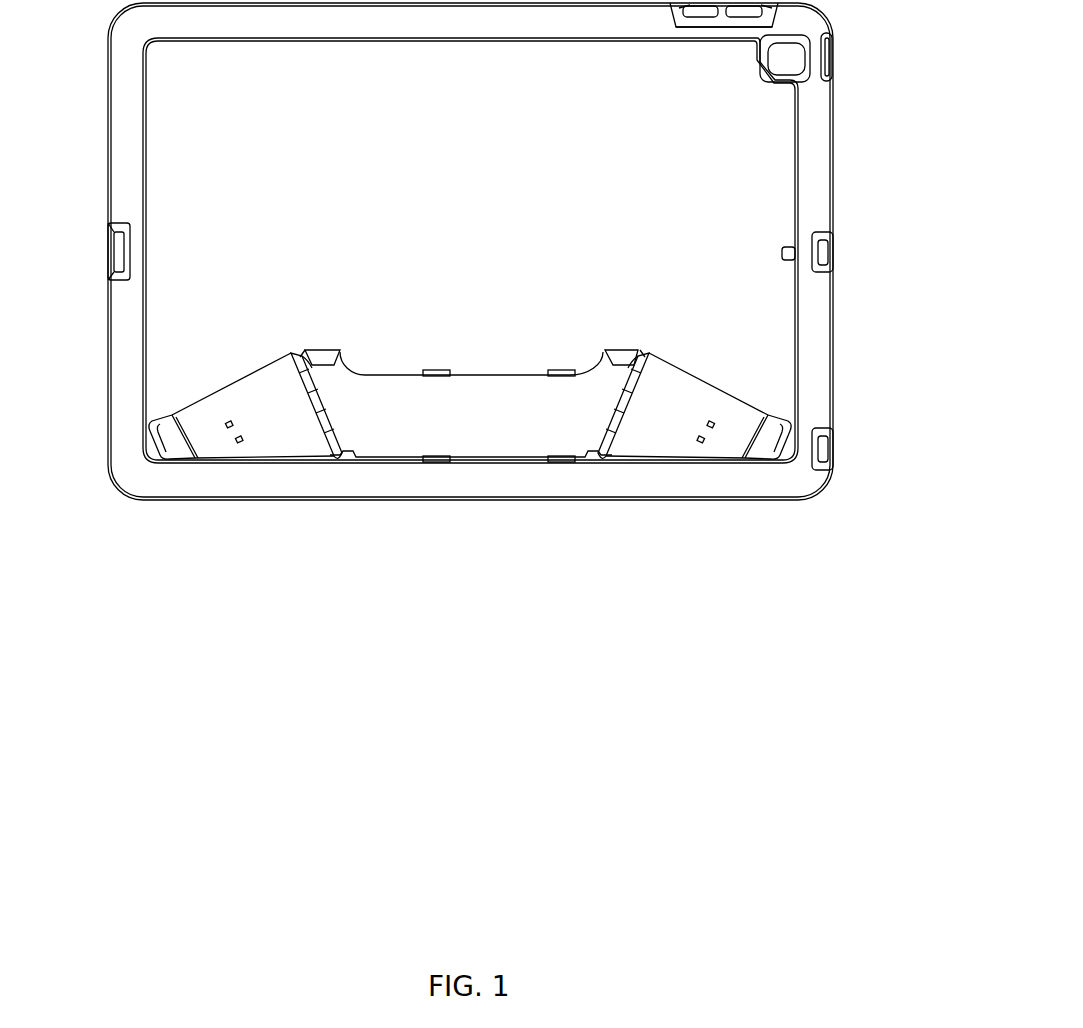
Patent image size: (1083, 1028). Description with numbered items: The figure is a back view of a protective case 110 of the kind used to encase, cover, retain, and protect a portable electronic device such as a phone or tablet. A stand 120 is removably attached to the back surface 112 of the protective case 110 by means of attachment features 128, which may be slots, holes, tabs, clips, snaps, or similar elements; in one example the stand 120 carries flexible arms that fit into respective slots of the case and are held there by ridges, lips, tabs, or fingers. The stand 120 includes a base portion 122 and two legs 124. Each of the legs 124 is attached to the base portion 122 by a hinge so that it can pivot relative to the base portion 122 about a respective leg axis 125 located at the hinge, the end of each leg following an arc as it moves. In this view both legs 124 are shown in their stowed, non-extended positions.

The protective case 110 is at (815, 159).
The back surface 112 is at (235, 123).
The stand 120 is at (388, 372).
The base portion 122 is at (378, 447).
The legs 124 is at (203, 413).
The leg axis 125 is at (310, 408).
The attachment features 128 is at (440, 372).